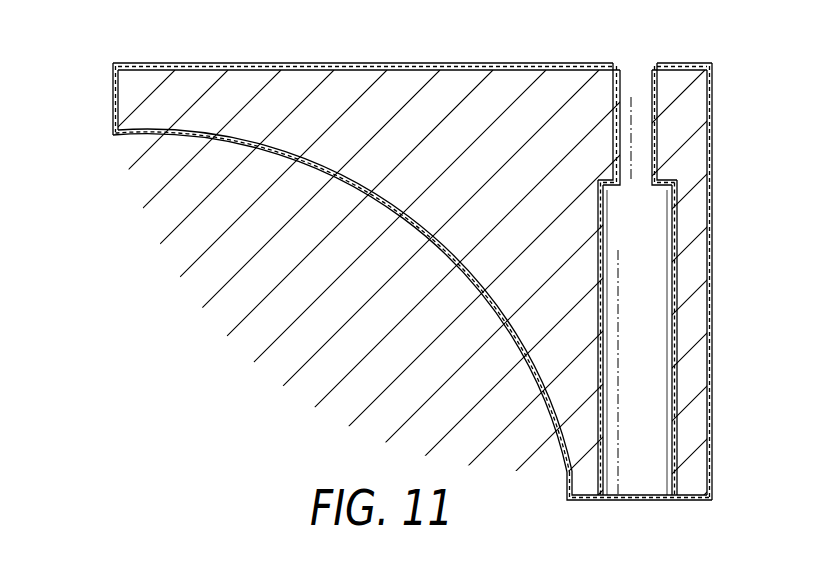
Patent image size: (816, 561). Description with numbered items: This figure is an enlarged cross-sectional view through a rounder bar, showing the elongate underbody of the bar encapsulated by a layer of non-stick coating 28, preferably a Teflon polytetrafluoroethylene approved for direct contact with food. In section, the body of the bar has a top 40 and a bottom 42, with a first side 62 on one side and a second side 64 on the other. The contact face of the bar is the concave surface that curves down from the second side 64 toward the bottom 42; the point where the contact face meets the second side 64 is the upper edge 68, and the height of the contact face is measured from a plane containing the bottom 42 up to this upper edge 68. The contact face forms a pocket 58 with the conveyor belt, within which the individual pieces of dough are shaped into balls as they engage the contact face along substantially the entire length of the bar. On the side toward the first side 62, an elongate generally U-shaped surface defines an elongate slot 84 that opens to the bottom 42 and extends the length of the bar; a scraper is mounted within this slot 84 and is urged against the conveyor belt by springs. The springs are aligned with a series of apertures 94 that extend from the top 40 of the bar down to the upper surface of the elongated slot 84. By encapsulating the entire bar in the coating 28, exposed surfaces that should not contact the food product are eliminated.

The non-stick coating 28 is at (397, 216).
The top 40 is at (378, 63).
The bottom 42 is at (690, 502).
The pocket 58 is at (227, 342).
The first side 62 is at (713, 385).
The second side 64 is at (113, 100).
The upper edge 68 is at (113, 135).
The elongate slot 84 is at (647, 238).
The apertures 94 is at (642, 136).